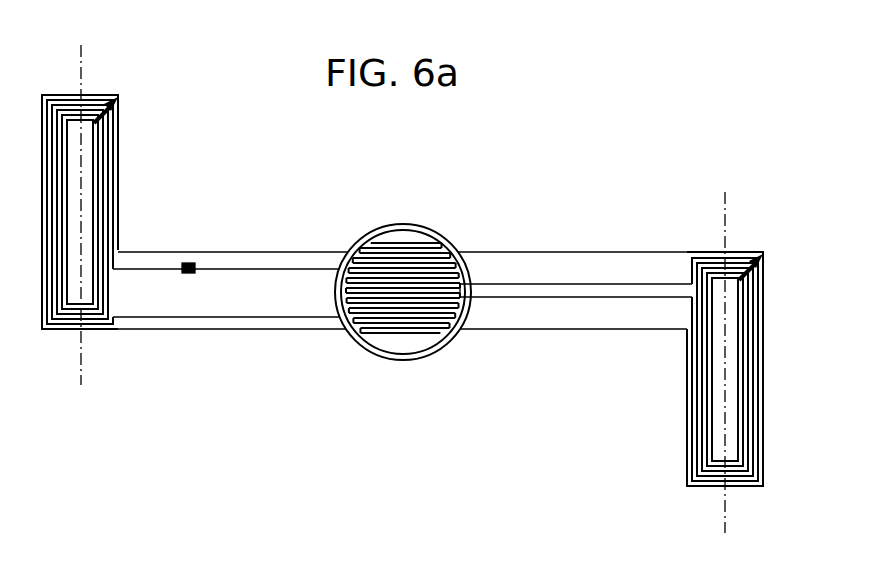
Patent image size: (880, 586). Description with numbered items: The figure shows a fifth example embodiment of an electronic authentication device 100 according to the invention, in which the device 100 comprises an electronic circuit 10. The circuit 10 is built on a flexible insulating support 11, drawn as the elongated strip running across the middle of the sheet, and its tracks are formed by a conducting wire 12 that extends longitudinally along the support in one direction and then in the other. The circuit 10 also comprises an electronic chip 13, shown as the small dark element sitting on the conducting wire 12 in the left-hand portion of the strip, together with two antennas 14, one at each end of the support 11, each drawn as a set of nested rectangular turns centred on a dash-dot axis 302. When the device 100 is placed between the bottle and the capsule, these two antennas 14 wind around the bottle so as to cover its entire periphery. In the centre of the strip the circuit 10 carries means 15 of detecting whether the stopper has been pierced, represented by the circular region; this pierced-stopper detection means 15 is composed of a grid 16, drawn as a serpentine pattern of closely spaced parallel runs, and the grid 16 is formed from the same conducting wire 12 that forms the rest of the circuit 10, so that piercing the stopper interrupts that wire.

The electronic authentication device 100 is at (616, 108).
The electronic circuit 10 is at (625, 340).
The flexible insulating support 11 is at (642, 268).
The conducting wire 12 is at (272, 262).
The electronic chip 13 is at (186, 260).
The antenna 14 is at (63, 92).
The means of detecting if the stopper has been pierced 15 is at (377, 222).
The grid 16 is at (395, 312).
The axis 302 is at (730, 216).